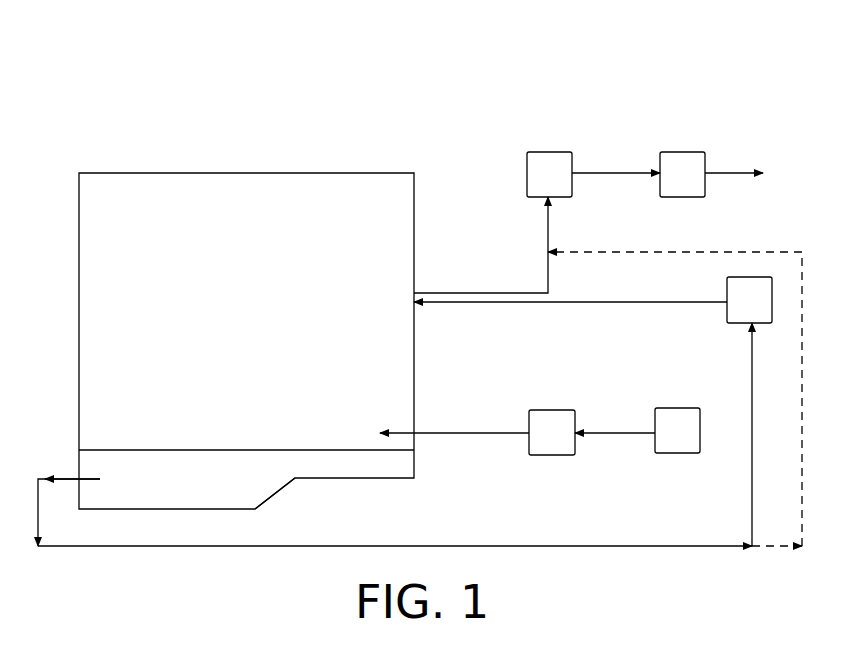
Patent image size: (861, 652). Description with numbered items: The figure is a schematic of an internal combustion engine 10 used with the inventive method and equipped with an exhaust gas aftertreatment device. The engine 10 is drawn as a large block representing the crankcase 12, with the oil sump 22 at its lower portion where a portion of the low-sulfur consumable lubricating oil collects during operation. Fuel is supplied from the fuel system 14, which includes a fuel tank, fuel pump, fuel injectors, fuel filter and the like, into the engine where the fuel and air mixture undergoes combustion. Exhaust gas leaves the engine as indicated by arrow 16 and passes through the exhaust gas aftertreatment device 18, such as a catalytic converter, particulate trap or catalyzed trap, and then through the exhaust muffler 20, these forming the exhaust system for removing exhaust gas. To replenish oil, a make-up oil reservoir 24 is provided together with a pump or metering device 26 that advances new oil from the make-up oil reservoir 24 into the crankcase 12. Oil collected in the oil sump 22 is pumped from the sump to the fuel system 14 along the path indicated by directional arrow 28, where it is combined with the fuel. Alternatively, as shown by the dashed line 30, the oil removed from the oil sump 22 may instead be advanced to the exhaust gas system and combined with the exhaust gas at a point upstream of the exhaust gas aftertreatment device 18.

The engine 10 is at (440, 117).
The crankcase 12 is at (79, 370).
The fuel system 14 is at (727, 290).
The arrow indicating exhaust gas removal 16 is at (548, 267).
The exhaust gas aftertreatment device 18 is at (550, 152).
The exhaust muffler 20 is at (685, 152).
The oil sump 22 is at (277, 493).
The make-up oil reservoir 24 is at (682, 408).
The pump or metering device 26 is at (550, 410).
The directional arrow 28 is at (237, 546).
The dashed line 30 is at (803, 387).